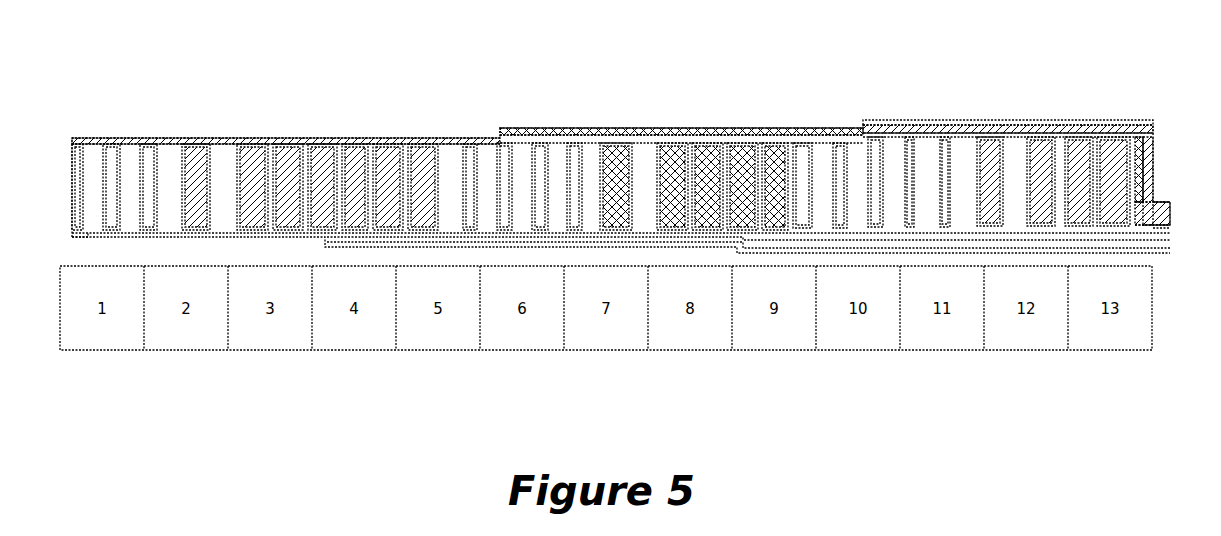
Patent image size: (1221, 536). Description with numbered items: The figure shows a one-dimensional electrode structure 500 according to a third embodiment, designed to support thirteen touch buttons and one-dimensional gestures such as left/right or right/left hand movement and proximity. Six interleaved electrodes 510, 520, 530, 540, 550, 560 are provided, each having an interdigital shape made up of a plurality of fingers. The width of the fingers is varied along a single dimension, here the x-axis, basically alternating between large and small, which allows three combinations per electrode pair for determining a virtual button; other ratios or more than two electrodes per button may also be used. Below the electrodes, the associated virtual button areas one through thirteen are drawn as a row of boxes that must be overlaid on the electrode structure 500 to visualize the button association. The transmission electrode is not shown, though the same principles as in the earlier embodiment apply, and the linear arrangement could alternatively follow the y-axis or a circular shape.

The electrode structure 500 is at (744, 72).
The interleaved electrode 510 is at (198, 138).
The interleaved electrode 520 is at (88, 232).
The interleaved electrode 530 is at (483, 165).
The interleaved electrode 540 is at (744, 142).
The interleaved electrode 550 is at (960, 147).
The interleaved electrode 560 is at (1110, 148).